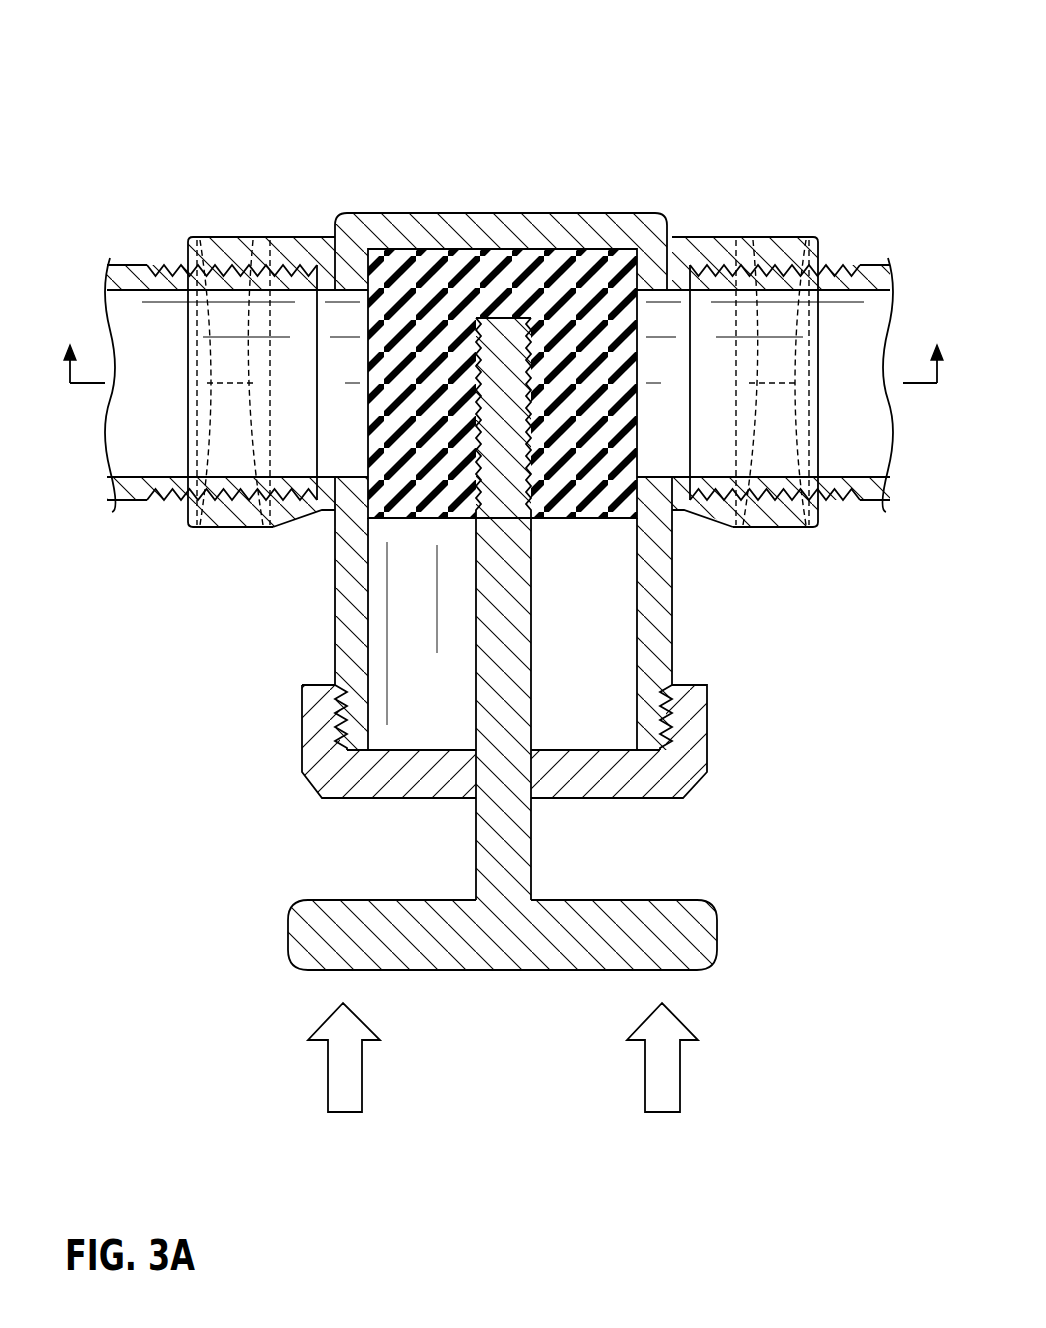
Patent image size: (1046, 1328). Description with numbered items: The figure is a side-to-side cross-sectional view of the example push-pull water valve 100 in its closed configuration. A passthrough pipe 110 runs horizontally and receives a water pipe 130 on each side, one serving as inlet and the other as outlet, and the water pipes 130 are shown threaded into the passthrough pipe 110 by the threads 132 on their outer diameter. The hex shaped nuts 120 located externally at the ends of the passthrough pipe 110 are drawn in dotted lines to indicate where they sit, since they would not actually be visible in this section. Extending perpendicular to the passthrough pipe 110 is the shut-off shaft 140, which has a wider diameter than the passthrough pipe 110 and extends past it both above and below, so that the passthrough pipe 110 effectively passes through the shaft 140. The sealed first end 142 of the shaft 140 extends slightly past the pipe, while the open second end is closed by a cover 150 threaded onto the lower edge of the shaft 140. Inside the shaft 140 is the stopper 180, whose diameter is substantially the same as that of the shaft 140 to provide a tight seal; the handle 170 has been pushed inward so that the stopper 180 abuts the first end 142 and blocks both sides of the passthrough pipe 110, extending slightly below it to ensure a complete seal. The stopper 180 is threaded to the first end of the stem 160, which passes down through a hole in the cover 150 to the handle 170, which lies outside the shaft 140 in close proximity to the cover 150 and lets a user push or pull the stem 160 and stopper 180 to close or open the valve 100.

The push-pull water valve 100 is at (217, 167).
The passthrough pipe 110 is at (343, 320).
The hex shaped nut 120 is at (233, 528).
The water pipe 130 is at (125, 437).
The threads of the water pipe 132 is at (162, 500).
The shut-off shaft 140 is at (663, 618).
The first end of the shaft 142 is at (470, 213).
The cover 150 is at (705, 728).
The stem 160 is at (522, 633).
The handle 170 is at (515, 970).
The stopper 180 is at (573, 277).